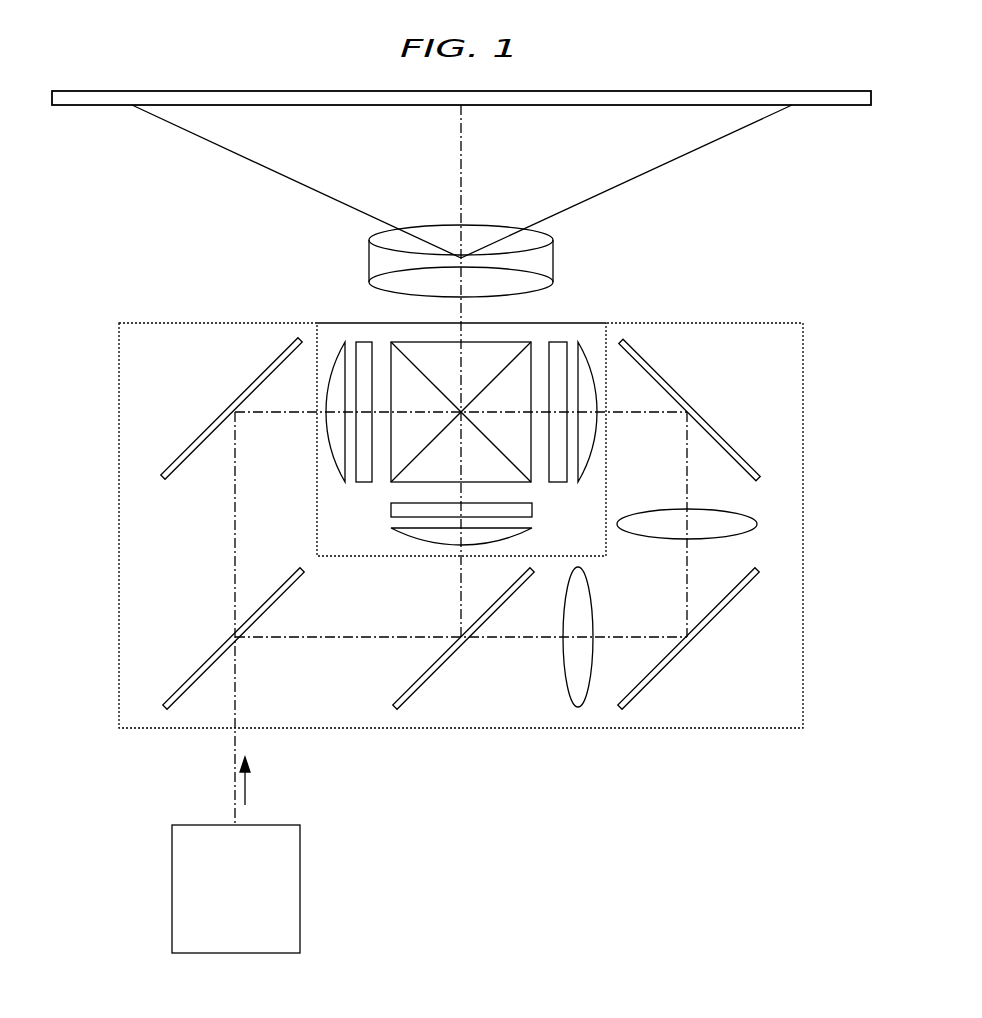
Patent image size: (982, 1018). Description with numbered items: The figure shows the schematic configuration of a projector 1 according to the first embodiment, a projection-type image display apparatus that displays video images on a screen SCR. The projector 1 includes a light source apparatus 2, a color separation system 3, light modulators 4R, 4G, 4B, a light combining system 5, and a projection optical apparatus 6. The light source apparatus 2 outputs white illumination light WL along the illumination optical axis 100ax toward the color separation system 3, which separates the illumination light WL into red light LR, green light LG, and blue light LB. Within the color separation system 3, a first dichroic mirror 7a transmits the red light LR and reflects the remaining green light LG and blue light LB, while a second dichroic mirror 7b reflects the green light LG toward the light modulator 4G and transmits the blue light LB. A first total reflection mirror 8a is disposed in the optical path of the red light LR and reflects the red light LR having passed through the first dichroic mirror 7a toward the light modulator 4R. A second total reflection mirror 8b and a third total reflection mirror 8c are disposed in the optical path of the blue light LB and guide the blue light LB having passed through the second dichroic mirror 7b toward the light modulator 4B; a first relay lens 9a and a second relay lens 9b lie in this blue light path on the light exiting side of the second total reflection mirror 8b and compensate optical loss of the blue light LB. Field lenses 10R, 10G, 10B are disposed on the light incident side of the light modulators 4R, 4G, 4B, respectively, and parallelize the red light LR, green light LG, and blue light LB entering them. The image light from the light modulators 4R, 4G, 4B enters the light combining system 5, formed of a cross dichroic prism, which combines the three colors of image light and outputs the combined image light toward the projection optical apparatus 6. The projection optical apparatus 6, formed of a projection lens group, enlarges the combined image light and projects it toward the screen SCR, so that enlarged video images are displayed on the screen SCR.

The projector 1 is at (812, 296).
The light source apparatus 2 is at (300, 893).
The color separation system 3 is at (119, 470).
The light combining system 5 is at (483, 352).
The projection optical apparatus 6 is at (441, 237).
The light modulator 4R is at (363, 338).
The light modulator 4G is at (395, 510).
The light modulator 4B is at (558, 338).
The field lens 10R is at (345, 340).
The field lens 10G is at (398, 536).
The field lens 10B is at (583, 338).
The first dichroic mirror 7a is at (195, 670).
The second dichroic mirror 7b is at (438, 672).
The first total reflection mirror 8a is at (210, 425).
The second total reflection mirror 8b is at (715, 622).
The third total reflection mirror 8c is at (718, 430).
The first relay lens 9a is at (565, 655).
The second relay lens 9b is at (750, 512).
The screen SCR is at (835, 108).
The illumination light WL is at (250, 783).
The red light LR is at (235, 546).
The green light LG is at (460, 593).
The blue light LB is at (687, 582).
The illumination optical axis 100ax is at (233, 800).